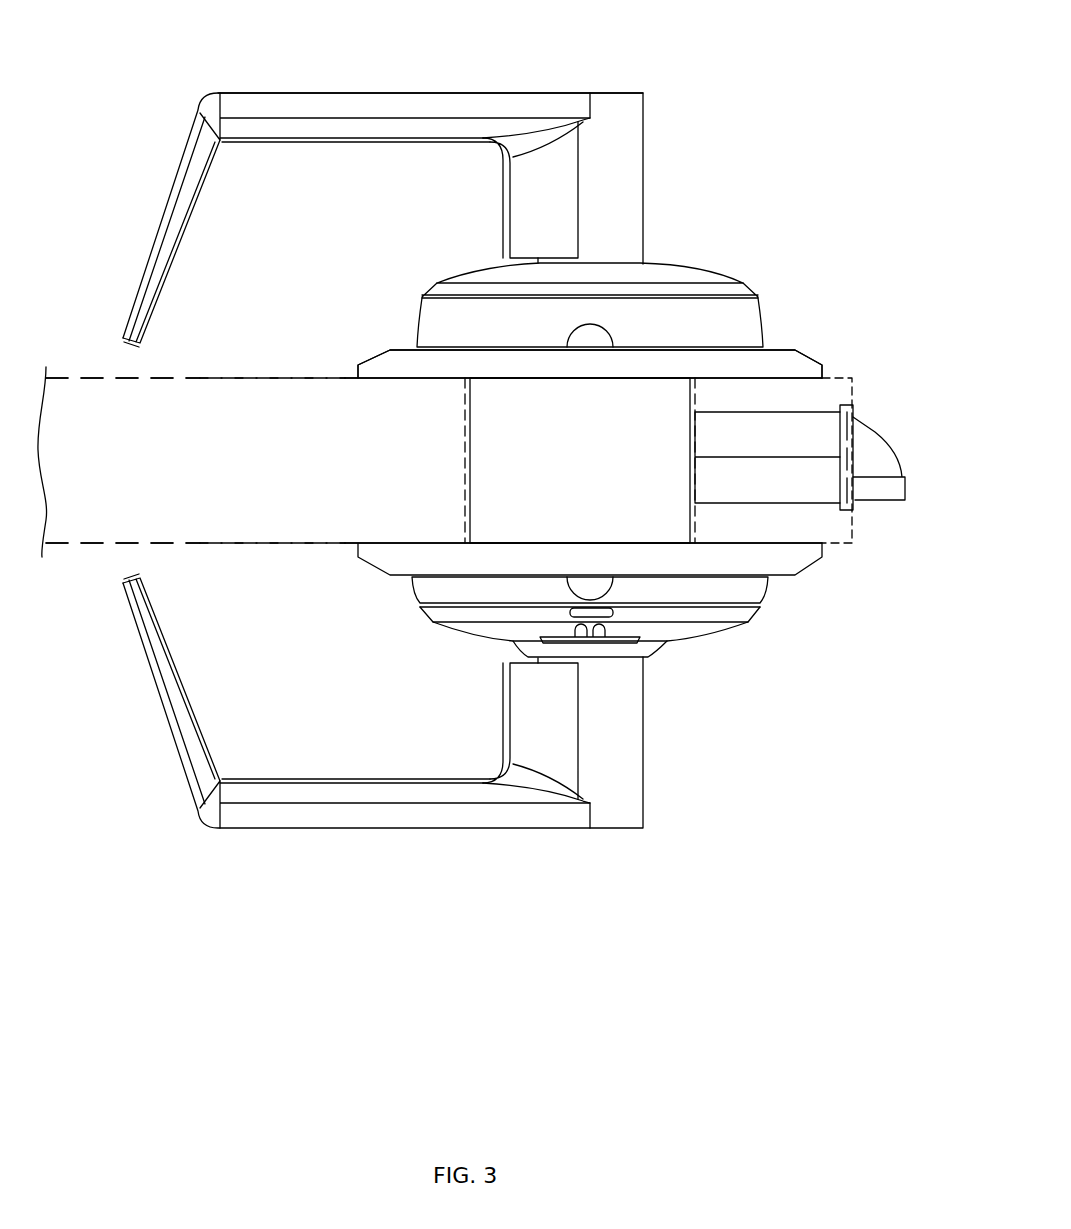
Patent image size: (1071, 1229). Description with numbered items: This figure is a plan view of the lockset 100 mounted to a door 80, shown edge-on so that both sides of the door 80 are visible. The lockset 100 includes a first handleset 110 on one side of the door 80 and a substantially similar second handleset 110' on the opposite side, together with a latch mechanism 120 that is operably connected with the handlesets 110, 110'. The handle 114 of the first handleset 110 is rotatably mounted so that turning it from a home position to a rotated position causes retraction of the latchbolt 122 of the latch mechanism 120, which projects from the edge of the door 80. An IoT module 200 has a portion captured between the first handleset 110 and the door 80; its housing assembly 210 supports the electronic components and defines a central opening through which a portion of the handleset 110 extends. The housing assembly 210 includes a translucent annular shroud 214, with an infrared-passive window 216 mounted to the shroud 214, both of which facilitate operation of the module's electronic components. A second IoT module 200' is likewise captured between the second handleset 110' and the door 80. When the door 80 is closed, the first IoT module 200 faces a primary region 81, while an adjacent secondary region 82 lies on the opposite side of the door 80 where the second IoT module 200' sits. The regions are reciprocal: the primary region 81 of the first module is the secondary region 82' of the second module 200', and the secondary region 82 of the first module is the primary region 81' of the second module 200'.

The lockset 100 is at (123, 42).
The door 80 is at (284, 377).
The primary region 81 is at (115, 331).
The secondary region 82' is at (205, 349).
The primary region 81' is at (115, 585).
The secondary region 82 is at (207, 570).
The first handleset 110 is at (428, 188).
The handle 114 is at (491, 93).
The IoT module 200 is at (552, 403).
The infrared-passive window 216 is at (600, 331).
The housing assembly 210 is at (840, 362).
The translucent annular shroud 214 is at (781, 346).
The latch mechanism 120 is at (922, 410).
The latchbolt 122 is at (880, 437).
The second IoT module 200' is at (610, 625).
The second handleset 110' is at (435, 701).